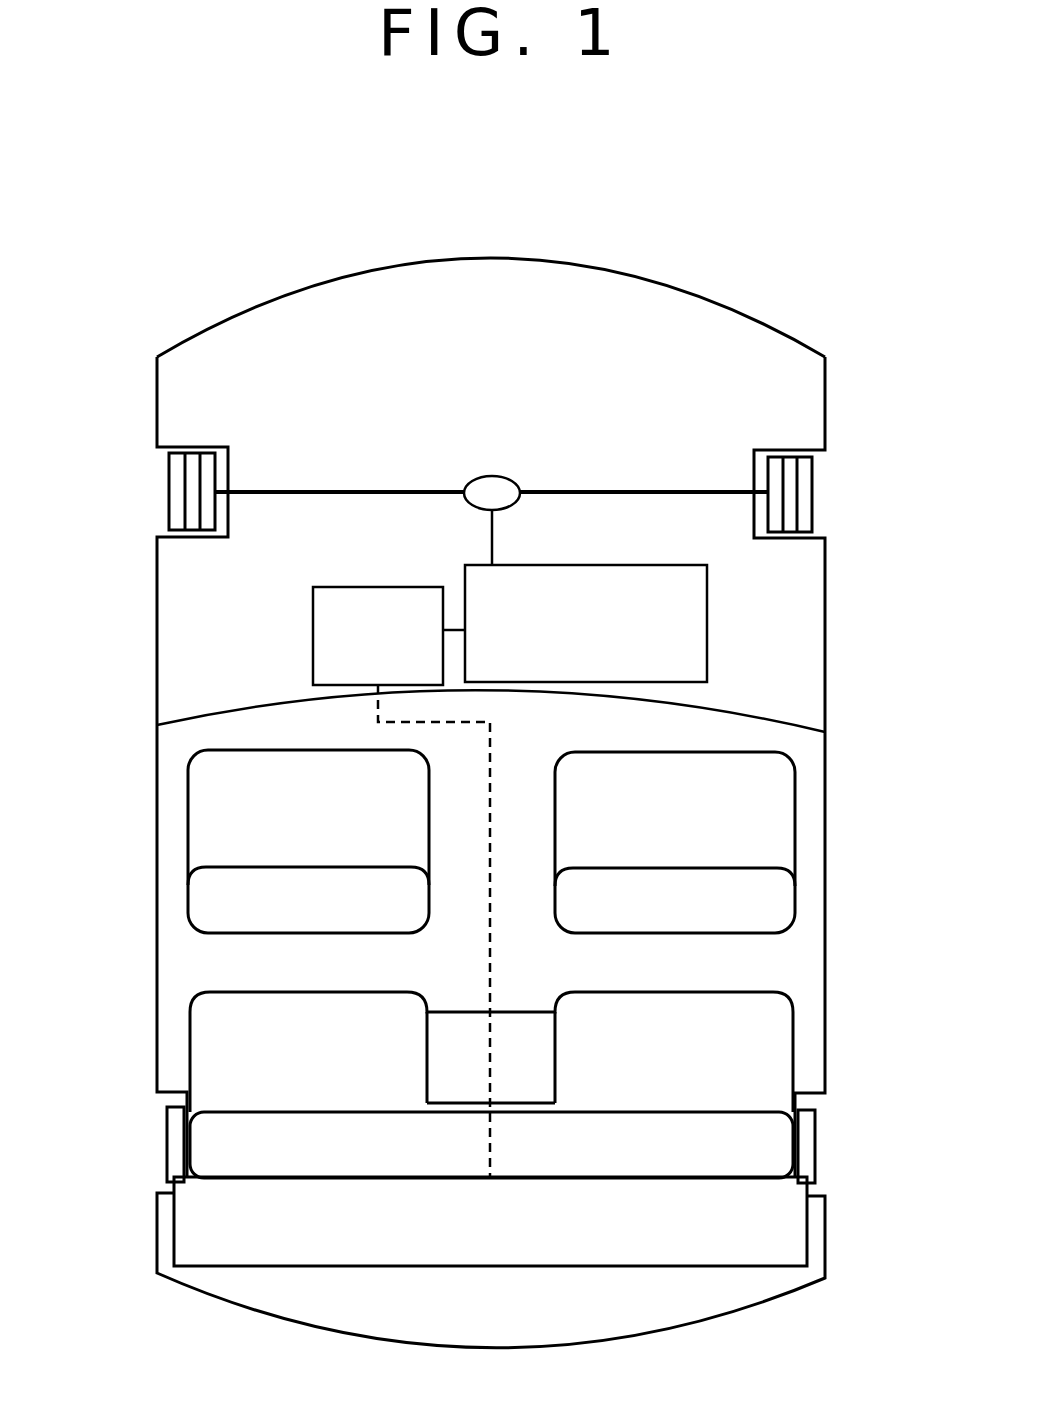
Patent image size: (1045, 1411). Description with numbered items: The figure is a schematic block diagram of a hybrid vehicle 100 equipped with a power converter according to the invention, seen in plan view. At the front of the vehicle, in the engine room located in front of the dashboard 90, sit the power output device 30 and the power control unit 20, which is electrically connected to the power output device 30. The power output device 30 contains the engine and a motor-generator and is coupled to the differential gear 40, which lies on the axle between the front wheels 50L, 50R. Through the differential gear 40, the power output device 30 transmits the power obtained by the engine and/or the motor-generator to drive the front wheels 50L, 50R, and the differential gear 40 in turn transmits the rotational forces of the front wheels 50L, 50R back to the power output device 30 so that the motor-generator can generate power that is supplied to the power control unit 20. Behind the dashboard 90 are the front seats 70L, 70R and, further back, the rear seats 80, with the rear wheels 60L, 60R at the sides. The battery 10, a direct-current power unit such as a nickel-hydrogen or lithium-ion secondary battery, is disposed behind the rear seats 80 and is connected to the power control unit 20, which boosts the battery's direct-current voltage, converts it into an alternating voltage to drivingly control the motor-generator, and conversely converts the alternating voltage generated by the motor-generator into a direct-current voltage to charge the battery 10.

The hybrid vehicle 100 is at (522, 217).
The battery 10 is at (497, 1245).
The PCU (Power Control Unit) 20 is at (348, 598).
The power output device 30 is at (664, 573).
The differential gear (DG) 40 is at (485, 473).
The left front wheel 50L is at (180, 485).
The right front wheel 50R is at (807, 494).
The left rear wheel 60L is at (176, 1143).
The right rear wheel 60R is at (805, 1148).
The left front seat 70L is at (308, 772).
The right front seat 70R is at (640, 770).
The rear seats 80 is at (306, 1010).
The dashboard 90 is at (746, 712).